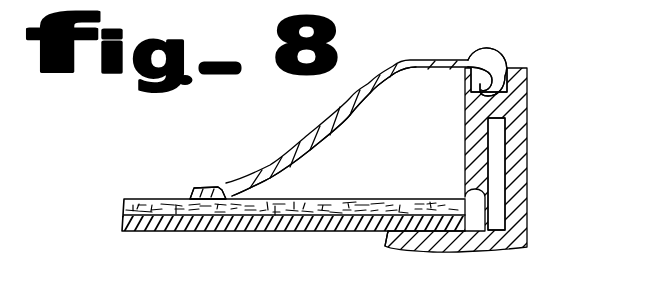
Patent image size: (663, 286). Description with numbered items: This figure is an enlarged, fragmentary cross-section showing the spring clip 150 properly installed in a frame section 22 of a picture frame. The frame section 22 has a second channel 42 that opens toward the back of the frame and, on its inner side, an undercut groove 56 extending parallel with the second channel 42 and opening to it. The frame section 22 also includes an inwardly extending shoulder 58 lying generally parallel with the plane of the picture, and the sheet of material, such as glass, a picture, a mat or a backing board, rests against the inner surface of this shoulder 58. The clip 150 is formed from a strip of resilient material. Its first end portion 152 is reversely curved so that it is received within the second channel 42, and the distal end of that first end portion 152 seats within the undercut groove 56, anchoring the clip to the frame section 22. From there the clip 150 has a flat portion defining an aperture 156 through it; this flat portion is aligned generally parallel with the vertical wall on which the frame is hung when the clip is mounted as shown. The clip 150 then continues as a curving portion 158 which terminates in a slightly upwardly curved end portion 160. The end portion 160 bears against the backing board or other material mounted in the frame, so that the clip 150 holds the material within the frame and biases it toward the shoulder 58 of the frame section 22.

The frame section 22 is at (541, 125).
The second channel 42 is at (511, 62).
The undercut groove 56 is at (485, 80).
The shoulder 58 is at (413, 246).
The spring clip 150 is at (302, 143).
The first end portion 152 is at (493, 89).
The aperture 156 is at (465, 66).
The curving portion 158 is at (328, 134).
The end portion 160 is at (220, 194).